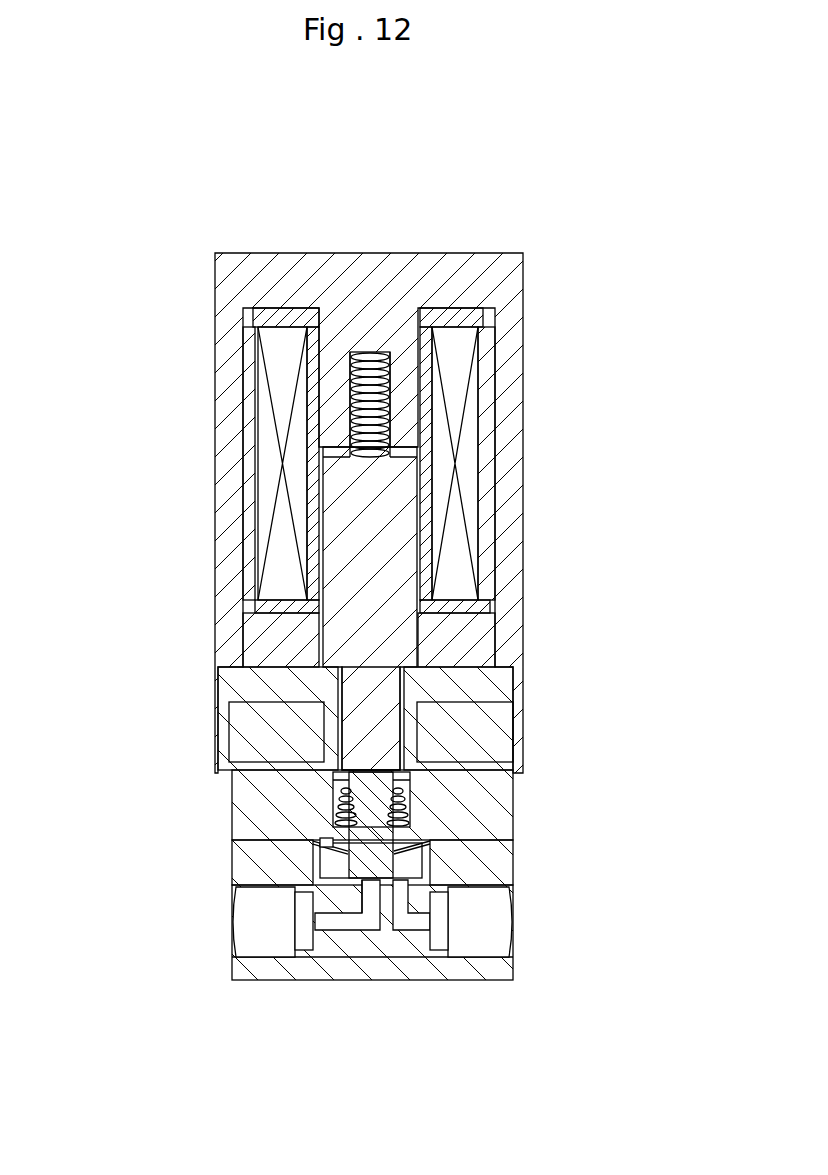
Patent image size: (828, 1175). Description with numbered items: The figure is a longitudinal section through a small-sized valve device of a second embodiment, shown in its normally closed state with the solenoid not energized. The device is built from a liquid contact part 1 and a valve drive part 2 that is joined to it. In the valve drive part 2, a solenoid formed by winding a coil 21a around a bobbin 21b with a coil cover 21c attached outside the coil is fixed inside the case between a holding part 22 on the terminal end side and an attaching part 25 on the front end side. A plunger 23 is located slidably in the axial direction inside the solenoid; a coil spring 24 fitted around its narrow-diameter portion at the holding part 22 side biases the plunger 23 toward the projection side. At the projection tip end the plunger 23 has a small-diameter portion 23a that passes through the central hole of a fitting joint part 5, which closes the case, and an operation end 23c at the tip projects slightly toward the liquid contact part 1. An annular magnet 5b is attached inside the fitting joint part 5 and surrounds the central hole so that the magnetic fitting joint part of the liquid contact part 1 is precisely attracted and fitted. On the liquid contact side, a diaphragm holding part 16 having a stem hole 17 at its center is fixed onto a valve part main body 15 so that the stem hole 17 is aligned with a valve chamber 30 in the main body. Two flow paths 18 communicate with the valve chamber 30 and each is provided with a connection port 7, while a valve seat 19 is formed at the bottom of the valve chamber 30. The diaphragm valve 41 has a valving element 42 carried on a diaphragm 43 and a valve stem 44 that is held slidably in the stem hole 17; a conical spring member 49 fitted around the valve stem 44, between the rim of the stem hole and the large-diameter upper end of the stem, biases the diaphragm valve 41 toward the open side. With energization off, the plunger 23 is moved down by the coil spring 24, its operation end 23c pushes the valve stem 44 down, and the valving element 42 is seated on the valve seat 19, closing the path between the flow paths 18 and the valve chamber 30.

The liquid contact part 1 is at (219, 831).
The valve drive part 2 is at (215, 530).
The fitting joint part 5 is at (525, 736).
The annular magnet 5b is at (500, 718).
The connection port 7 is at (265, 923).
The valve part main body 15 is at (458, 980).
The diaphragm holding part 16 is at (255, 817).
The stem hole 17 is at (332, 778).
The flow path 18 is at (407, 920).
The valve seat 19 is at (432, 912).
The coil 21a is at (468, 442).
The bobbin 21b is at (483, 313).
The coil cover 21c is at (240, 380).
The holding part 22 is at (368, 268).
The plunger 23 is at (395, 565).
The small-diameter portion 23a is at (370, 690).
The operation end 23c is at (372, 765).
The coil spring 24 is at (388, 385).
The attaching part 25 is at (482, 632).
The valve chamber 30 is at (410, 867).
The diaphragm valve 41 is at (331, 860).
The valving element 42 is at (362, 890).
The diaphragm 43 is at (420, 843).
The valve stem 44 is at (398, 780).
The spring member 49 is at (408, 812).